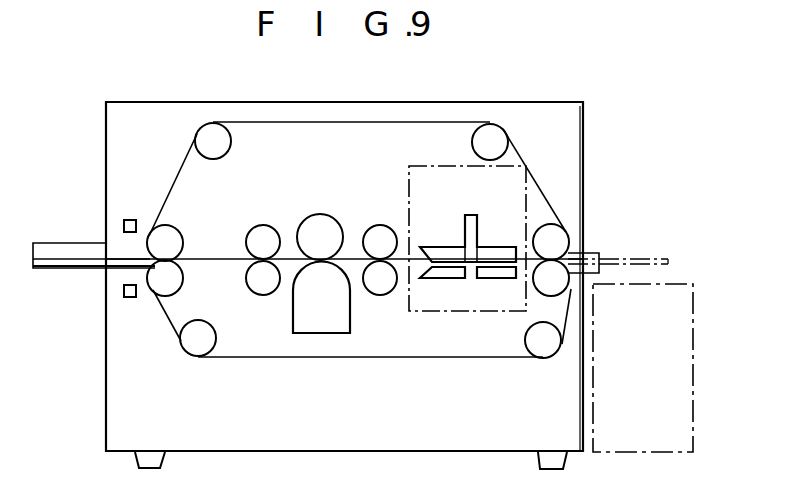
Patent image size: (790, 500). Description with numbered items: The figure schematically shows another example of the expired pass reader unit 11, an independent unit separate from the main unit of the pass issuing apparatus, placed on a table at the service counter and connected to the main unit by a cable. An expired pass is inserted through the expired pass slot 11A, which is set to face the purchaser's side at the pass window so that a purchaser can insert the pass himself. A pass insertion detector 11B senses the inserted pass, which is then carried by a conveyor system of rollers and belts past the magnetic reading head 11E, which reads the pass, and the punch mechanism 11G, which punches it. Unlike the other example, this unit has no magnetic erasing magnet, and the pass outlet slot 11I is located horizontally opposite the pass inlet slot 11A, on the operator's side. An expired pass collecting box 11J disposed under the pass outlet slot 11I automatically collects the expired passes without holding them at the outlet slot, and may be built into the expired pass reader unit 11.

The expired pass reader unit 11 is at (586, 116).
The expired pass slot 11A is at (68, 246).
The pass insertion detector 11B is at (129, 218).
The magnetic reading head 11E is at (334, 314).
The punch mechanism 11G is at (414, 186).
The pass outlet slot 11I is at (594, 250).
The expired pass collecting box 11J is at (668, 290).